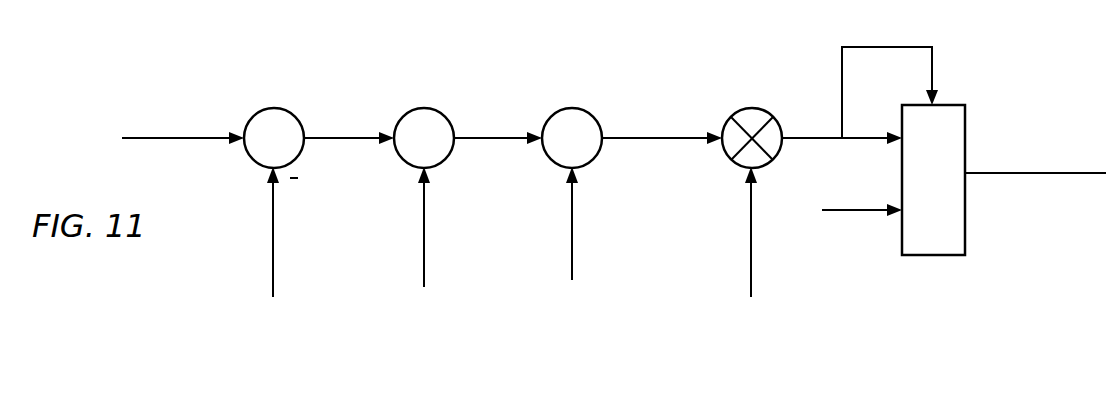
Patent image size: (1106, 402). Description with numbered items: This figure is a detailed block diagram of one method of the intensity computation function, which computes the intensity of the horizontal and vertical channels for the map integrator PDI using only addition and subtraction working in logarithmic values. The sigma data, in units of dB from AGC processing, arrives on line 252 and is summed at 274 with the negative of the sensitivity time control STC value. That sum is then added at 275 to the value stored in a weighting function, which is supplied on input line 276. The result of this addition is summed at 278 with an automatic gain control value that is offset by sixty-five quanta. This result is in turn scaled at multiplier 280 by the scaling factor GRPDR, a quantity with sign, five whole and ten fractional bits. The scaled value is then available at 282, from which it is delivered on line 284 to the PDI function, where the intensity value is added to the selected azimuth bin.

The AGC processing line 252 is at (146, 138).
The summer 274 is at (300, 117).
The adder 275 is at (446, 117).
The weighting function input line 276 is at (424, 230).
The summer 278 is at (585, 109).
The multiplier 280 is at (765, 110).
The scaled value output 282 is at (957, 105).
The output line to PDI 284 is at (1005, 173).